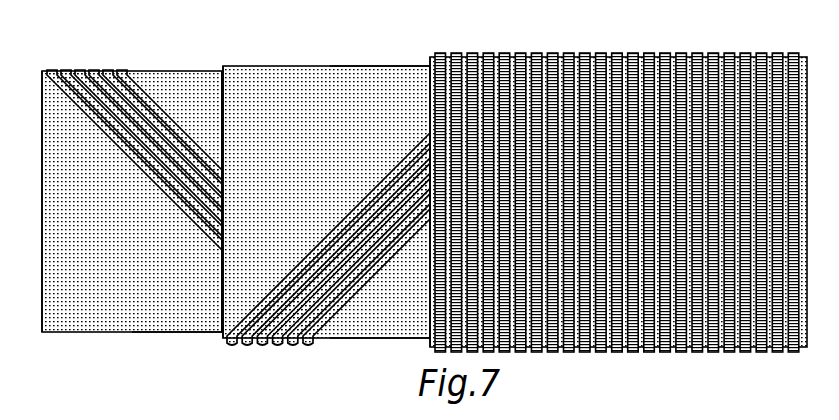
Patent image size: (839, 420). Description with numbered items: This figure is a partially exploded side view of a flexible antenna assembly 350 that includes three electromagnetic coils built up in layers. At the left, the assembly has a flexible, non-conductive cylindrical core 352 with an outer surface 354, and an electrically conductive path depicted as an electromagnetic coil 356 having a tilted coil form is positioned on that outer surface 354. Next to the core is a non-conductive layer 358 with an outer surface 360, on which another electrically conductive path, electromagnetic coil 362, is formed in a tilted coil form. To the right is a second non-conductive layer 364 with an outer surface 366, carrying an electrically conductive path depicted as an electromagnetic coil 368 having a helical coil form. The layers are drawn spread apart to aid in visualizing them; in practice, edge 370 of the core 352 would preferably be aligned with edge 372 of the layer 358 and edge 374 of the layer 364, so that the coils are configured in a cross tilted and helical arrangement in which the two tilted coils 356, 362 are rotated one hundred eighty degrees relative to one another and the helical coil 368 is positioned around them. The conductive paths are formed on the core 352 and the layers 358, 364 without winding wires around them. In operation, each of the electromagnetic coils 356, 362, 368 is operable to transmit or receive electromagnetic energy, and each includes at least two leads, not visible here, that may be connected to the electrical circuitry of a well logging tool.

The flexible antenna assembly 350 is at (669, 43).
The flexible, non-conductive cylindrical core 352 is at (105, 327).
The outer surface 354 is at (170, 327).
The electromagnetic coil 356 is at (94, 71).
The non-conductive layer 358 is at (277, 75).
The outer surface 360 is at (357, 75).
The electromagnetic coil 362 is at (259, 346).
The second non-conductive layer 364 is at (517, 60).
The outer surface 366 is at (597, 60).
The electromagnetic coil 368 is at (730, 57).
The edge 370 is at (42, 306).
The edge 372 is at (222, 318).
The edge 374 is at (430, 318).